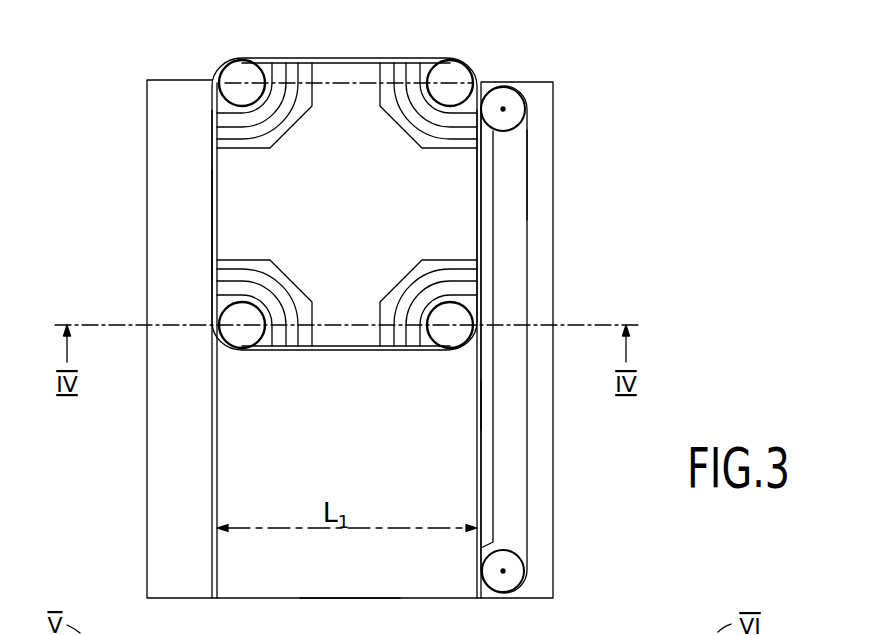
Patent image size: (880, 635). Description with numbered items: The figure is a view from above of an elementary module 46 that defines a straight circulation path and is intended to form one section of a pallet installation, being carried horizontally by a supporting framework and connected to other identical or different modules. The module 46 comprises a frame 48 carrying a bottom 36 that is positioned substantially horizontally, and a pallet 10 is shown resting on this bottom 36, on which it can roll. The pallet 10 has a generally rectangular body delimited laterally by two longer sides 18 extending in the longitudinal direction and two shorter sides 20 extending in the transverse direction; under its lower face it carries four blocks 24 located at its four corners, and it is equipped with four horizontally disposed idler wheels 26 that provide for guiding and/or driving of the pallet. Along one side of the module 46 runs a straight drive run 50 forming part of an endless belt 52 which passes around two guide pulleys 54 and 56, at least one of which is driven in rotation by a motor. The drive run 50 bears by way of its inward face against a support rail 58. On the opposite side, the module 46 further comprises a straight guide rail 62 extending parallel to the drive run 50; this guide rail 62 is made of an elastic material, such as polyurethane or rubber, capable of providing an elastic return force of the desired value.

The pallet 10 is at (345, 105).
The longitudinal sides 18 is at (212, 225).
The transverse sides 20 is at (278, 58).
The blocks 24 is at (287, 147).
The idler wheels 26 is at (237, 72).
The bottom 36 is at (326, 459).
The elementary module 46 is at (125, 145).
The frame 48 is at (330, 580).
The drive run 50 is at (478, 410).
The endless belt 52 is at (537, 232).
The guide pulley 54 is at (503, 103).
The guide pulley 56 is at (498, 578).
The support rail 58 is at (487, 443).
The guide rail 62 is at (226, 469).